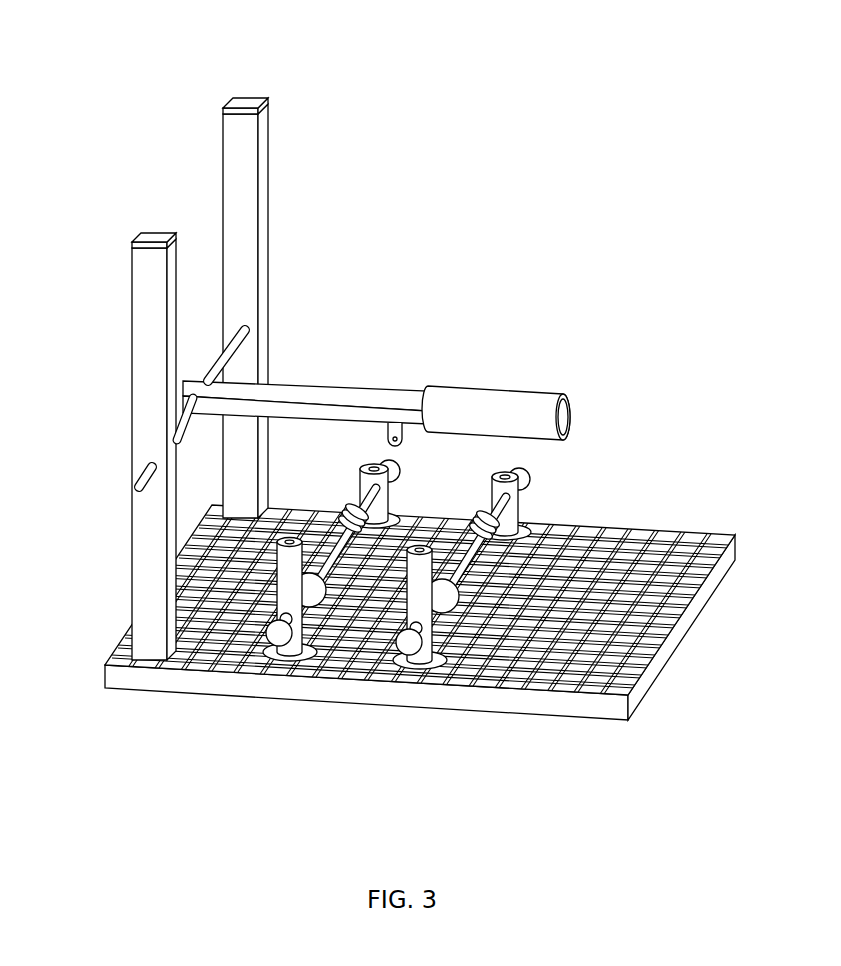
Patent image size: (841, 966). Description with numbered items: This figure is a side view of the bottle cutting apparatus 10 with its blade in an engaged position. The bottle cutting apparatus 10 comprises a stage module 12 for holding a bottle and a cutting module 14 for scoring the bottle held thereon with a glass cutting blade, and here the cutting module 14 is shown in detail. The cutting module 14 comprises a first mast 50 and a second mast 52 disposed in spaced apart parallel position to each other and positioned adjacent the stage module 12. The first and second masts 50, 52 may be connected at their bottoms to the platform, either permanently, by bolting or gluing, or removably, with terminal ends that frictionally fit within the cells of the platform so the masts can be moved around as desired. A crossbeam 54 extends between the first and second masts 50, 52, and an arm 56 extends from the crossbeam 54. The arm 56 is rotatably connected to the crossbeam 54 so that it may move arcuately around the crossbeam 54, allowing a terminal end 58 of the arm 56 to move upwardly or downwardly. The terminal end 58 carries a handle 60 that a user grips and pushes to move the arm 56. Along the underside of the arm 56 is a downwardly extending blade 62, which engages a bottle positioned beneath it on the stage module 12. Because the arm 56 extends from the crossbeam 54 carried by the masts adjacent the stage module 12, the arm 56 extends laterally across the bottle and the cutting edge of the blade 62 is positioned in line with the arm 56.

The bottle cutting apparatus 10 is at (205, 82).
The stage module 12 is at (290, 712).
The cutting module 14 is at (112, 278).
The first mast 50 is at (143, 535).
The second mast 52 is at (244, 175).
The crossbeam 54 is at (222, 362).
The arm 56 is at (286, 389).
The terminal end 58 is at (566, 396).
The handle 60 is at (484, 396).
The blade 62 is at (404, 442).